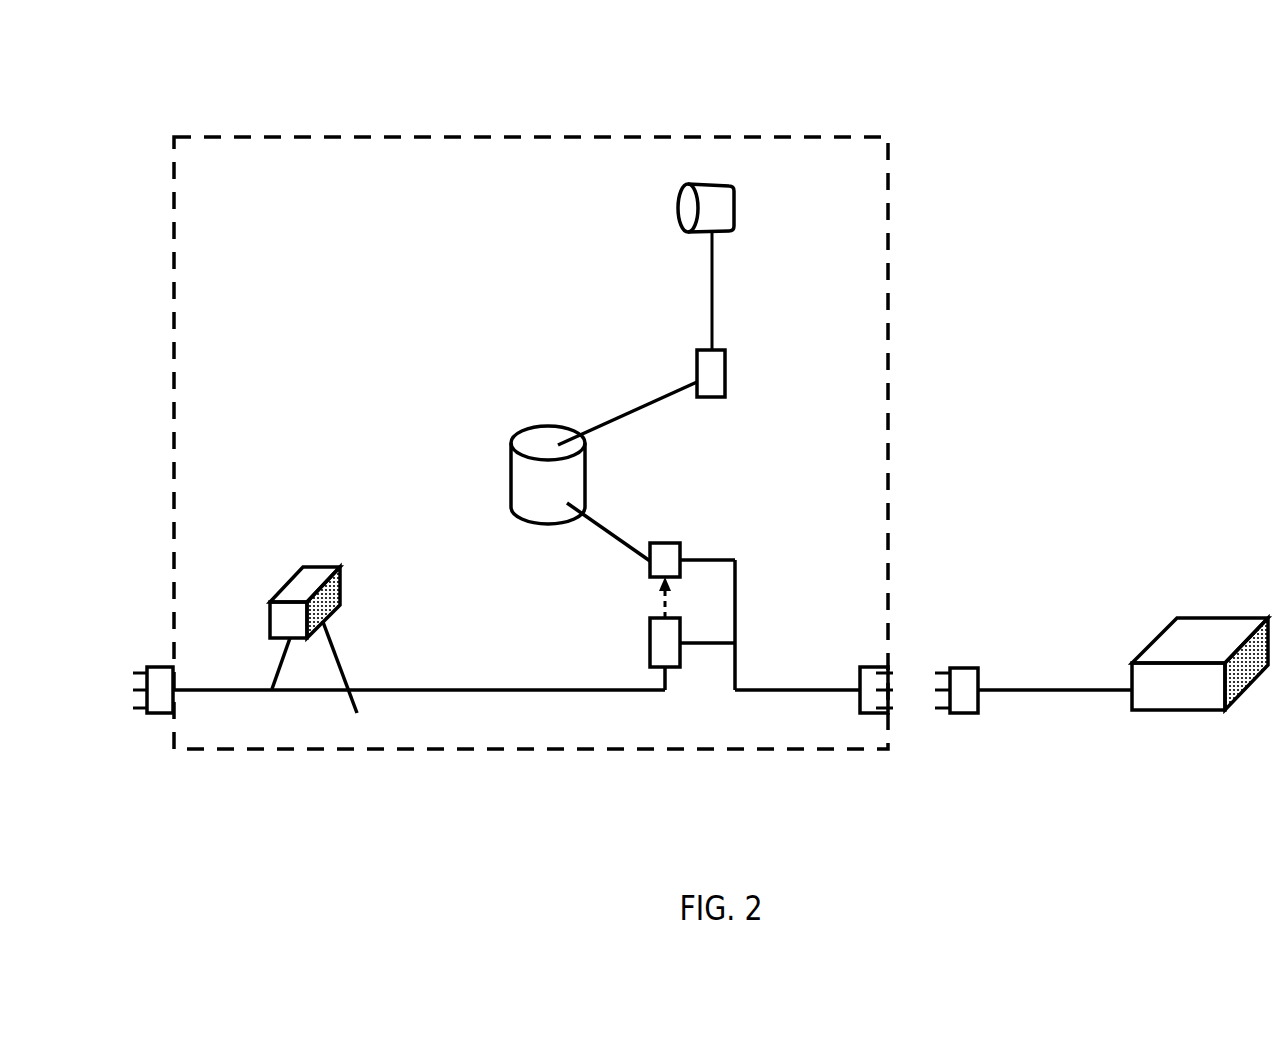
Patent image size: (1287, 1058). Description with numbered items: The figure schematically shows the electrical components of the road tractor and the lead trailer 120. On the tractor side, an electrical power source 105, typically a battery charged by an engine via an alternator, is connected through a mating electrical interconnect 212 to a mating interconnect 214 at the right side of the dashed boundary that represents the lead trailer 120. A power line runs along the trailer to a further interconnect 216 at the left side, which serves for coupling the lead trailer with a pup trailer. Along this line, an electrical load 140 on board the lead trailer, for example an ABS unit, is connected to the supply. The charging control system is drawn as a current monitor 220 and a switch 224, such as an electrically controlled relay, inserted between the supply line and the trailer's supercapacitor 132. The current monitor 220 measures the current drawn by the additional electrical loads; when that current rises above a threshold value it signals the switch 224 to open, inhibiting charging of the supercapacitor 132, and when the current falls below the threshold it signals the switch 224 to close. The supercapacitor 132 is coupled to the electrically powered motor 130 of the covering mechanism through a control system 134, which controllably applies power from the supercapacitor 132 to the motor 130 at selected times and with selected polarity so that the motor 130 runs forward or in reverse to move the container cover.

The electrical power source 105 is at (1168, 710).
The lead trailer 120 is at (580, 132).
The electrically powered motor 130 is at (683, 223).
The supercapacitor 132 is at (512, 440).
The control system 134 is at (697, 360).
The electrical load 140 is at (320, 659).
The mating electrical interconnect 212 is at (963, 713).
The mating electrical interconnect 214 is at (880, 713).
The connector 216 is at (155, 713).
The current monitor 220 is at (677, 667).
The switch 224 is at (682, 541).